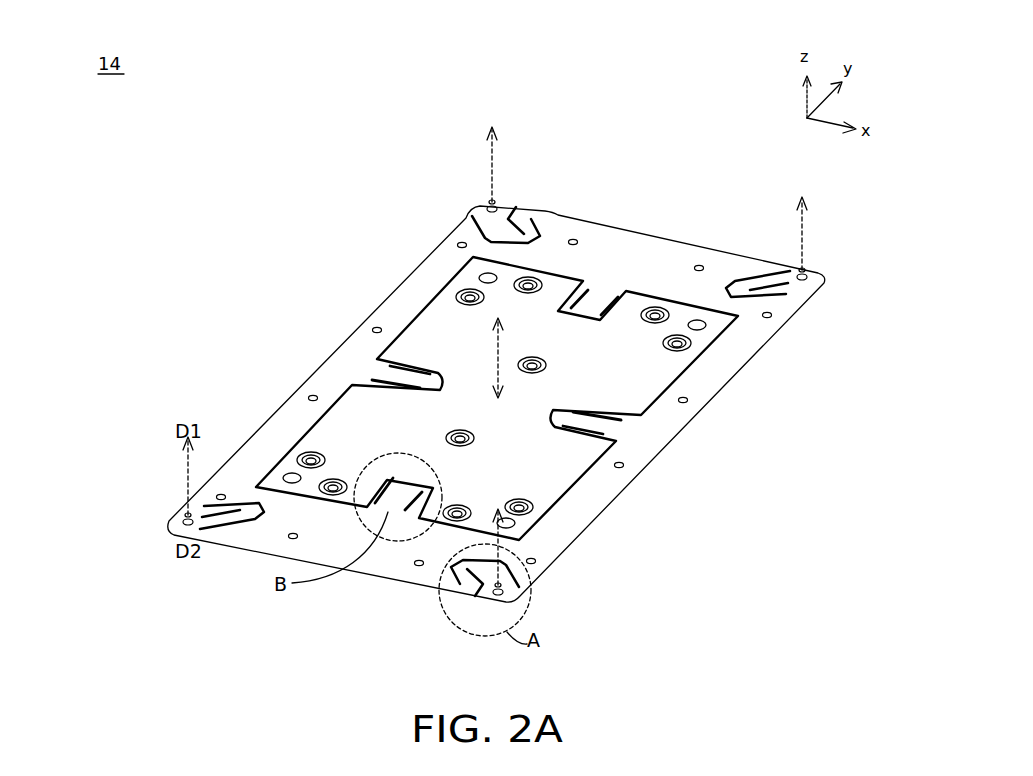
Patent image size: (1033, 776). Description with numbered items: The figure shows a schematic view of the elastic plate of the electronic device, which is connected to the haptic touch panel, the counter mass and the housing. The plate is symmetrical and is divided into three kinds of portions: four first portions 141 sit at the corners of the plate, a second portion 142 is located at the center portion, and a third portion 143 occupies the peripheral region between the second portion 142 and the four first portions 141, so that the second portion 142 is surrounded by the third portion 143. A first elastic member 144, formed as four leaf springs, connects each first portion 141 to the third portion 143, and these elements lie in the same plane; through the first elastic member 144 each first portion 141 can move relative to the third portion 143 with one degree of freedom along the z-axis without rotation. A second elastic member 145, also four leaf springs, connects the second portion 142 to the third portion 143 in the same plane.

The first portion 141 is at (486, 205).
The second portion 142 is at (440, 333).
The third portion 143 is at (650, 236).
The first elastic member 144 is at (512, 232).
The second elastic member 145 is at (600, 290).